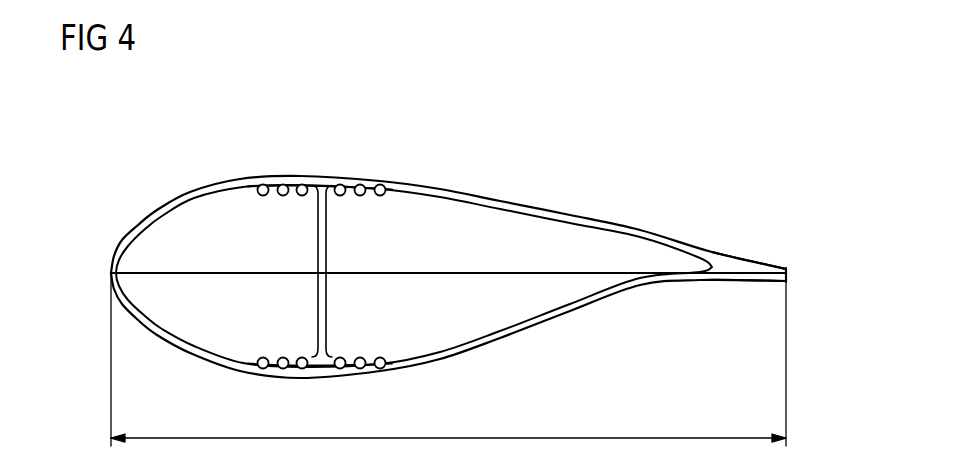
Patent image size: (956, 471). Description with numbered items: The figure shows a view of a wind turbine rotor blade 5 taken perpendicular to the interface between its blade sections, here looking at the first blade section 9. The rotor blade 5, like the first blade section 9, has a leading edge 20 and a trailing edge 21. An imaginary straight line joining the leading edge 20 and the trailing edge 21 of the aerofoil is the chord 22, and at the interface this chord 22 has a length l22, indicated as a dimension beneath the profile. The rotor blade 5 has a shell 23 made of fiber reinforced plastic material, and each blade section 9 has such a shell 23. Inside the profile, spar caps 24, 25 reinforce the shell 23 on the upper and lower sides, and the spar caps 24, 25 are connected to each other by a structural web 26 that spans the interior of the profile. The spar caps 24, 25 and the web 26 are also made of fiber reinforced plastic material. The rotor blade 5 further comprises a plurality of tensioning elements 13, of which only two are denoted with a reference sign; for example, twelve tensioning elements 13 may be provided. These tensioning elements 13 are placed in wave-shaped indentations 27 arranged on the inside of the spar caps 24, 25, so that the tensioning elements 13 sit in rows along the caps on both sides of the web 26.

The rotor blade 5 is at (208, 135).
The first blade section 9 is at (641, 226).
The tensioning elements 13 is at (263, 184).
The leading edge 20 is at (111, 273).
The trailing edge 21 is at (787, 273).
The chord 22 is at (440, 273).
The chord length l22 is at (560, 438).
The shell 23 is at (425, 188).
The spar cap 24 is at (318, 185).
The spar cap 25 is at (323, 369).
The structural web 26 is at (318, 243).
The wave-shaped indentations 27 is at (360, 184).